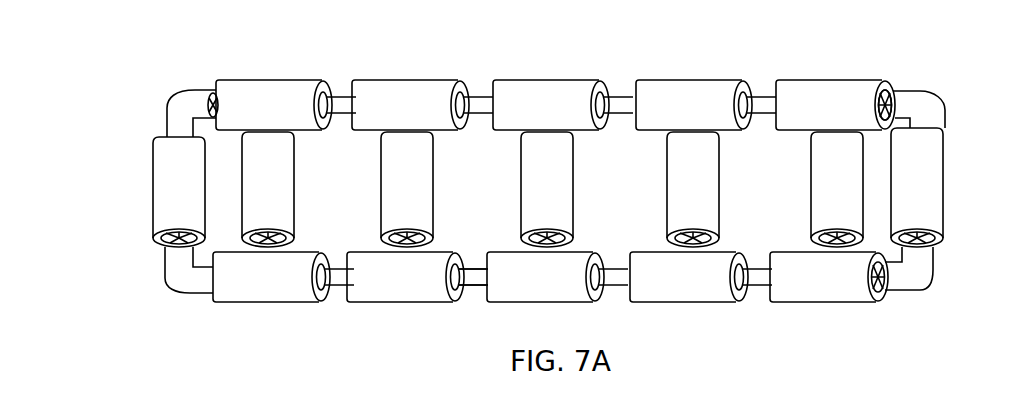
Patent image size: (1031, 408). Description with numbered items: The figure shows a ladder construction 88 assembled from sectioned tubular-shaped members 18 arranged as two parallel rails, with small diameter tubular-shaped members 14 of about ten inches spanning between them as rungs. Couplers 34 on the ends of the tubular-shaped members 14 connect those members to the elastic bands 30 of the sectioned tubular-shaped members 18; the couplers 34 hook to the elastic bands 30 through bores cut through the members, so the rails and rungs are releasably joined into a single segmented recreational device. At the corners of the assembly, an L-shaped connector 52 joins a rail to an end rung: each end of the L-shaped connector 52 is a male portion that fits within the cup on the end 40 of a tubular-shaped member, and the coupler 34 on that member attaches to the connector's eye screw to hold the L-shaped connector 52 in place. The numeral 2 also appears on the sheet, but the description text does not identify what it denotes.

The ladder construction 88 is at (166, 57).
The sectioned tubular-shaped member 18 is at (561, 69).
The tubular-shaped member 14 is at (160, 190).
The L-shaped connector 52 is at (176, 115).
The end of the tubular-shaped member 40 is at (888, 81).
The coupler 34 is at (893, 102).
The elastic band 30 is at (476, 289).
The system 2 is at (47, 402).